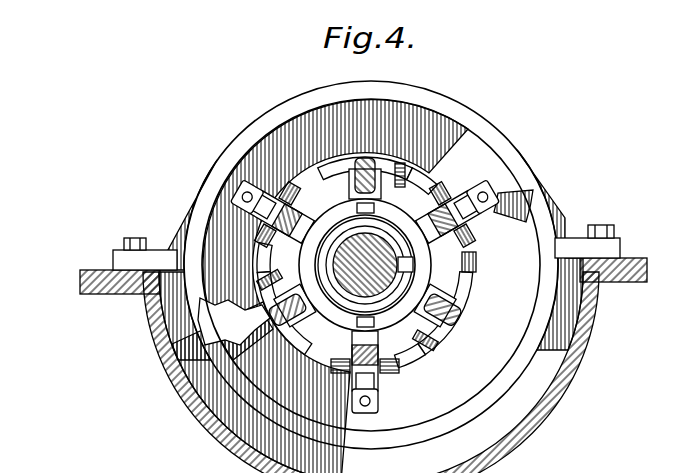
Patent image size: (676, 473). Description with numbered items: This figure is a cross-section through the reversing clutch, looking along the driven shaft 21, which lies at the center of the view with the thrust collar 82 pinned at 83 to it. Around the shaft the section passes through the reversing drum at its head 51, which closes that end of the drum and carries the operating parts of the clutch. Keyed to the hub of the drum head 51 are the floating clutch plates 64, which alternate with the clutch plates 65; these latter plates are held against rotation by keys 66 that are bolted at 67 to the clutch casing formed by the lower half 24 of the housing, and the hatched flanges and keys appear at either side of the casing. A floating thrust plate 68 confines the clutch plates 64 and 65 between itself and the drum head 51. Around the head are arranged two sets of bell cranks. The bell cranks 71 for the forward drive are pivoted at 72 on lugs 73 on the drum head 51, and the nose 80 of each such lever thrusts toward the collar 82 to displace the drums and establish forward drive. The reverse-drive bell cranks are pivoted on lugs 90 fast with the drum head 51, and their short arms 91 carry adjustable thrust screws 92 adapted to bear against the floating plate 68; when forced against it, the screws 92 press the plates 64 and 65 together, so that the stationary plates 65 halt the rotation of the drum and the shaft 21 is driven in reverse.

The driven shaft 21 is at (385, 270).
The lower half of the housing 24 is at (592, 330).
The head 51 is at (476, 271).
The floating clutch plates 64 is at (350, 152).
The clutch plates 65 is at (203, 184).
The keys 66 is at (118, 255).
The bolts 67 is at (132, 237).
The floating thrust plate 68 is at (484, 154).
The bell cranks 71 is at (376, 160).
The pivot 72 is at (262, 269).
The lugs 73 is at (413, 170).
The nose 80 is at (365, 265).
The thrust collar 82 is at (339, 310).
The pin 83 is at (414, 265).
The lugs 90 is at (270, 236).
The short arms 91 is at (383, 379).
The adjustable thrust screws 92 is at (478, 187).